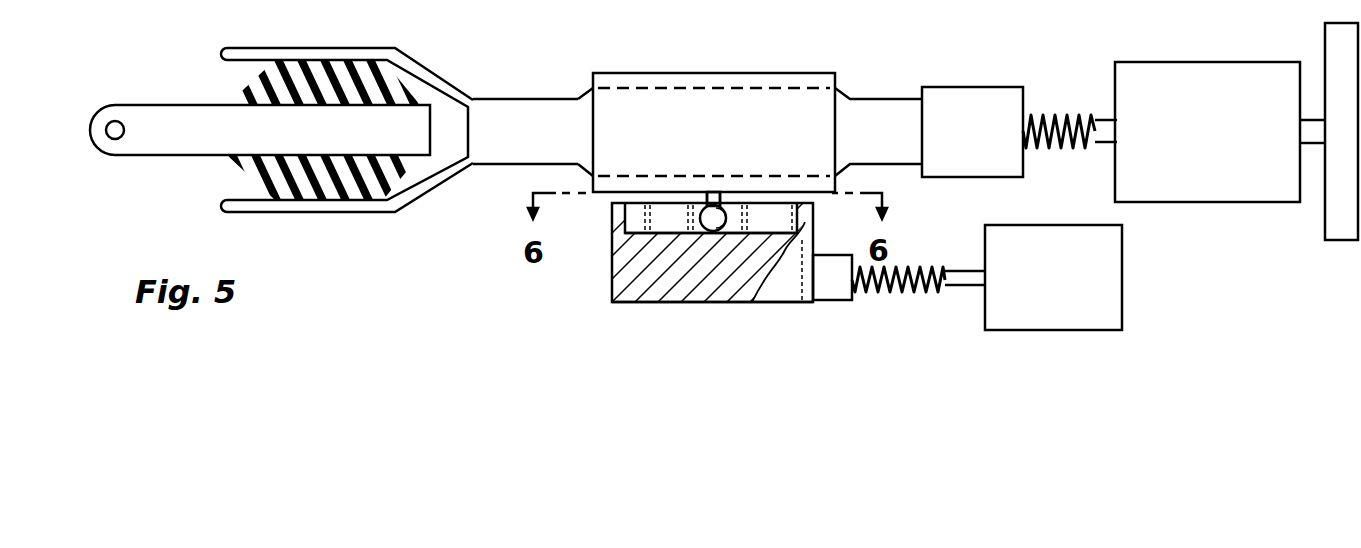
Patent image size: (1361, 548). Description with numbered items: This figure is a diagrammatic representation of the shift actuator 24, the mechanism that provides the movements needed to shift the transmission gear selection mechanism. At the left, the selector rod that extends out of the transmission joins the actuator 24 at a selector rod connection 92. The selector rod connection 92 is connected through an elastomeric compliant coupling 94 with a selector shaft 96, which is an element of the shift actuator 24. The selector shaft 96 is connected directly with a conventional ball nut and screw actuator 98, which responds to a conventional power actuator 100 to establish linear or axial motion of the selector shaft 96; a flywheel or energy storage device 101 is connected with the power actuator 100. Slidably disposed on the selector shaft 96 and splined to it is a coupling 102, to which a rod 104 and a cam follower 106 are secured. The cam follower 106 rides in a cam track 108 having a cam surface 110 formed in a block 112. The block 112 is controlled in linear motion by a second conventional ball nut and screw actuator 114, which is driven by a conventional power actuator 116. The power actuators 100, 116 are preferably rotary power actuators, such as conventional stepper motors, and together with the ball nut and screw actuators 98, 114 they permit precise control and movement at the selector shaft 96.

The actuator 24 is at (800, 114).
The selector rod connection 92 is at (148, 122).
The elastomeric compliant coupling 94 is at (390, 82).
The selector shaft 96 is at (523, 112).
The ball nut and screw actuator 98 is at (1037, 108).
The power actuator 100 is at (1260, 184).
The flywheel or energy storage device 101 is at (1348, 230).
The coupling 102 is at (808, 108).
The rod 104 is at (706, 203).
The cam follower 106 is at (713, 220).
The cam track 108 is at (660, 224).
The cam surface 110 is at (768, 221).
The block 112 is at (641, 287).
The ball nut and screw actuator 114 is at (859, 308).
The power actuator 116 is at (1050, 315).